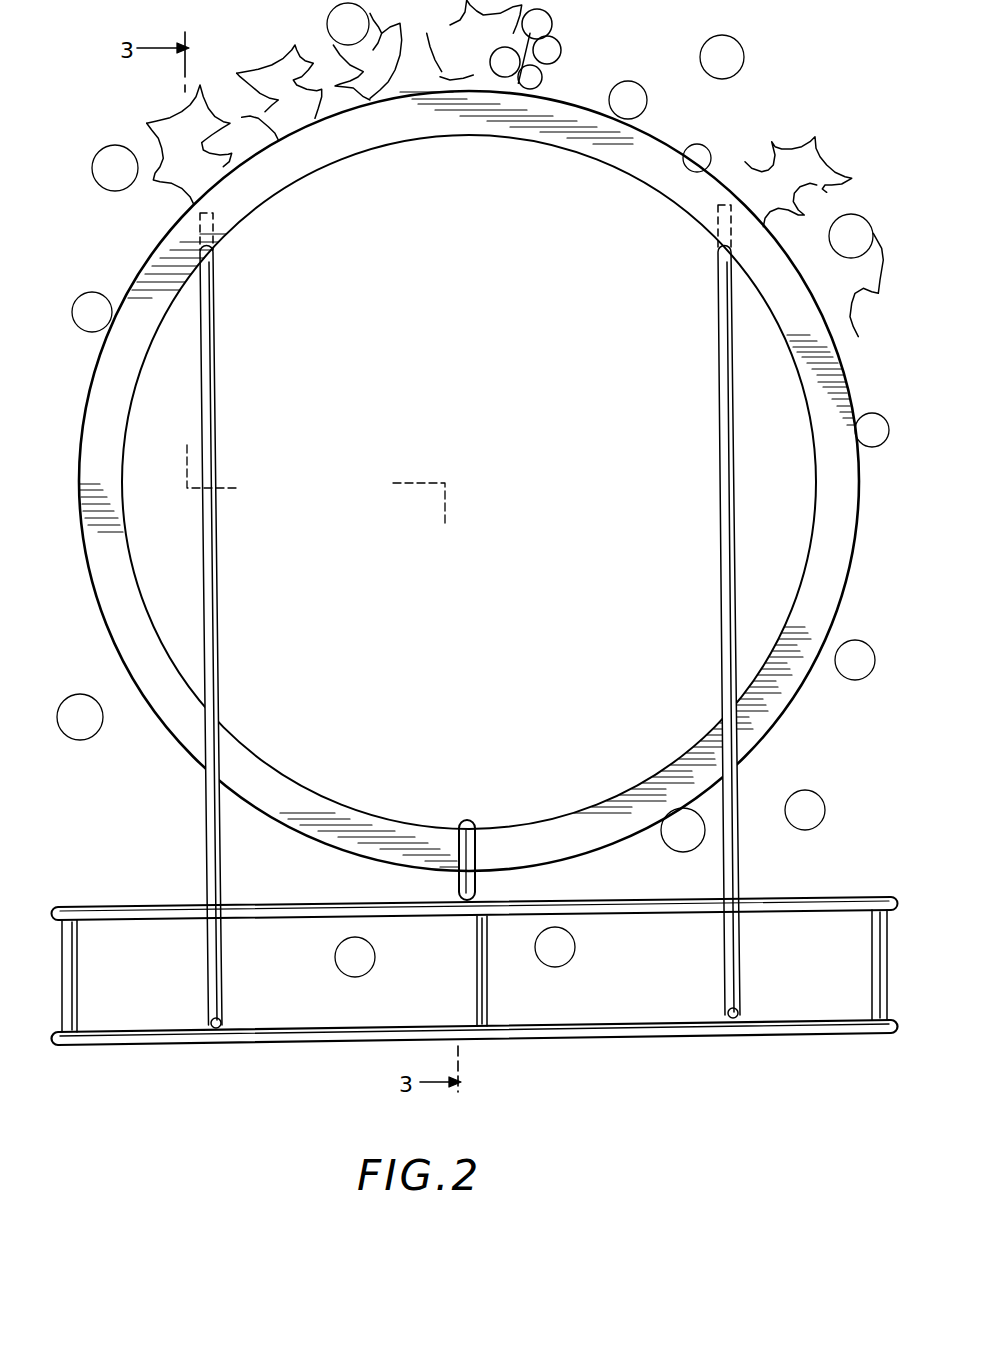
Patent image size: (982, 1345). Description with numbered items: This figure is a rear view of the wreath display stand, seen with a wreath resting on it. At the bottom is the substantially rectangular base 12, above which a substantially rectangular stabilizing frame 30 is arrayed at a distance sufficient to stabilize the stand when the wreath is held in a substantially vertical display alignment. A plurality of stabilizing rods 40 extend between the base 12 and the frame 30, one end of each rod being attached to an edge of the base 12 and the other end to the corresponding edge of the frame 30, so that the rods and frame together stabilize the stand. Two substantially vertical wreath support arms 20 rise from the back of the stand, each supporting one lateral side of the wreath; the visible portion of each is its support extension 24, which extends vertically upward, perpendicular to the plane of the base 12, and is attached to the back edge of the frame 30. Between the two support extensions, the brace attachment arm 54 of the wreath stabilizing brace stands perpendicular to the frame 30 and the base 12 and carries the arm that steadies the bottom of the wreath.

The base 12 is at (158, 1047).
The wreath support arm 20 is at (517, 616).
The support extension 24 is at (735, 513).
The stabilizing frame 30 is at (137, 905).
The stabilizing rod 40 is at (887, 955).
The brace attachment arm 54 is at (475, 826).